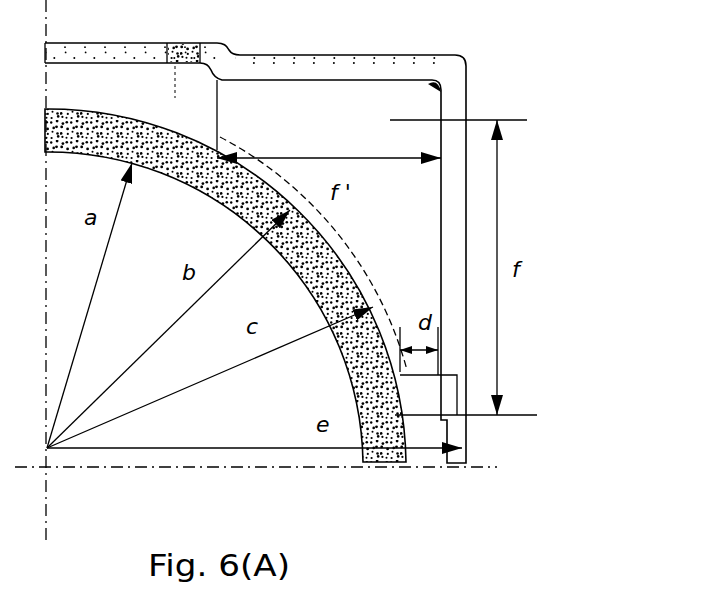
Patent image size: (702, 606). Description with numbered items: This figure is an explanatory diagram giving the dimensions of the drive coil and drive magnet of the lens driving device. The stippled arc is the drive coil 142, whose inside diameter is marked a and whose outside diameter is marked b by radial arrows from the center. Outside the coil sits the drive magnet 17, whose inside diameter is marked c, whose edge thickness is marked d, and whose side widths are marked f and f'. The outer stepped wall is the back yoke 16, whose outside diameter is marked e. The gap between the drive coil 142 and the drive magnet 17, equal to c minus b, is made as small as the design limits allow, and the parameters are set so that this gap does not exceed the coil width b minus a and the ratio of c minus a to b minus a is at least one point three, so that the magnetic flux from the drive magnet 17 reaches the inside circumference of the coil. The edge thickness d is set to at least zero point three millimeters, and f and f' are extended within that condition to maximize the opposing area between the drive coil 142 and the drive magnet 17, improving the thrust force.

The drive coil 142 is at (390, 463).
The back yoke 16 is at (468, 435).
The drive magnet 17 is at (417, 100).